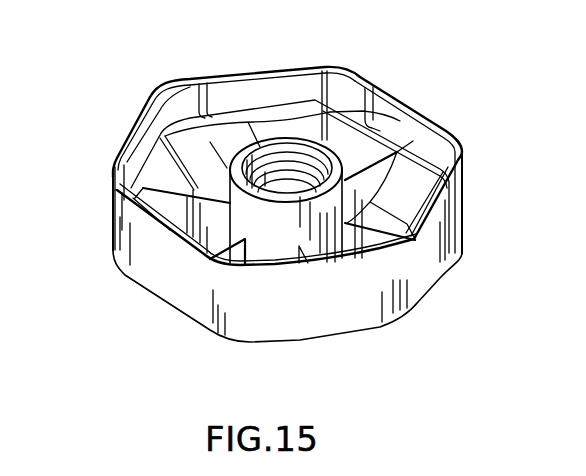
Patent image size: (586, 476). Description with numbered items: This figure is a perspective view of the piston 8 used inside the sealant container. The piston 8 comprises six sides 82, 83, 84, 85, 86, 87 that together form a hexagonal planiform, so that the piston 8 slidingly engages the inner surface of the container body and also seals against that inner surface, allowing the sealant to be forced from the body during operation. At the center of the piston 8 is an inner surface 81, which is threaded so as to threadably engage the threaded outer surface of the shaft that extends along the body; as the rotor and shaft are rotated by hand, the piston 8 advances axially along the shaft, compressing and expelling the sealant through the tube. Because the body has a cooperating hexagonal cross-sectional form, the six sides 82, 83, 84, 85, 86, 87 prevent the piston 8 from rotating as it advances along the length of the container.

The piston 8 is at (458, 145).
The inner surface 81 is at (289, 152).
The side 82 is at (347, 333).
The side 83 is at (153, 300).
The side 84 is at (128, 136).
The side 85 is at (209, 76).
The side 86 is at (442, 265).
The side 87 is at (420, 108).